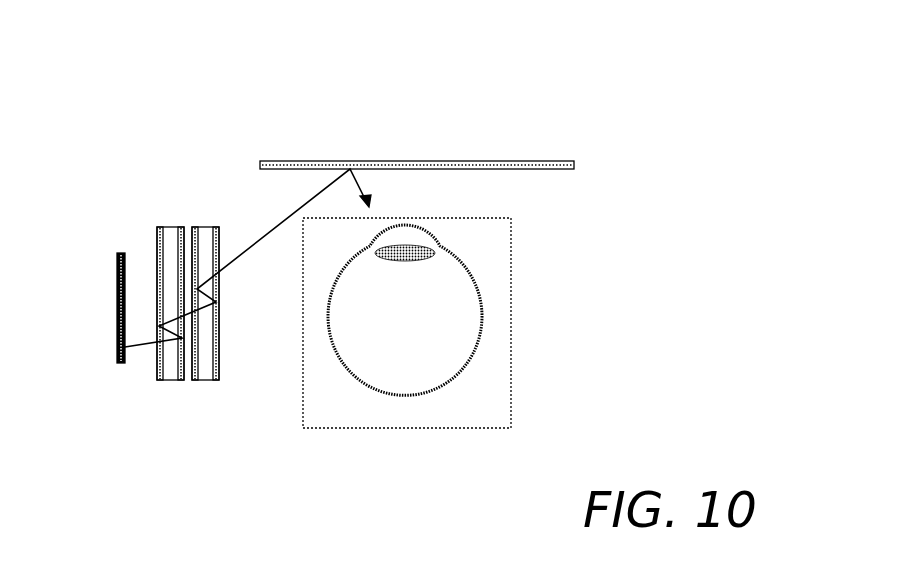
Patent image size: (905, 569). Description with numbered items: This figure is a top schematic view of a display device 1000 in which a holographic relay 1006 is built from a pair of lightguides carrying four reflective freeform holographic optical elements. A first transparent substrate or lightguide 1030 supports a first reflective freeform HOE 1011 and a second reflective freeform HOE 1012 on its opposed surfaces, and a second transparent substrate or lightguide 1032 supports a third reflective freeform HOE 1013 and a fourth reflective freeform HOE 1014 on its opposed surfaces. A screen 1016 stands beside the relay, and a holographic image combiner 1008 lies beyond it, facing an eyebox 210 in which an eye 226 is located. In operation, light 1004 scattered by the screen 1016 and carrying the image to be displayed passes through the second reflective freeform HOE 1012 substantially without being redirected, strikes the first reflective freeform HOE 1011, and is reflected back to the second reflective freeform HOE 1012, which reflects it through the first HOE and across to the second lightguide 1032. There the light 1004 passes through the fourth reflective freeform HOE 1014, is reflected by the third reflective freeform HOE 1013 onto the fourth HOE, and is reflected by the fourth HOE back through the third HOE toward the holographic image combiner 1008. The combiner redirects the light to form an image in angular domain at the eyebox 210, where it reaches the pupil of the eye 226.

The display device 1000 is at (113, 108).
The light 1004 is at (267, 238).
The holographic relay 1006 is at (179, 298).
The holographic image combiner 1008 is at (380, 160).
The first reflective freeform HOE 1011 is at (183, 227).
The second reflective freeform HOE 1012 is at (157, 247).
The third reflective freeform HOE 1013 is at (218, 243).
The fourth reflective freeform HOE 1014 is at (193, 227).
The screen 1016 is at (117, 282).
The first transparent substrate or lightguide 1030 is at (124, 297).
The second transparent substrate or lightguide 1032 is at (234, 273).
The eyebox 210 is at (459, 416).
The eye 226 is at (483, 312).